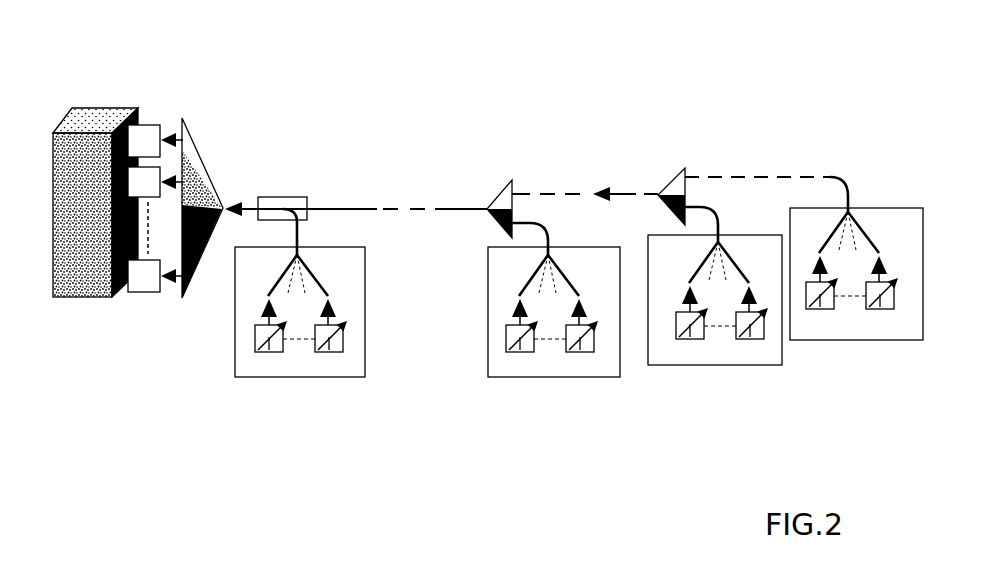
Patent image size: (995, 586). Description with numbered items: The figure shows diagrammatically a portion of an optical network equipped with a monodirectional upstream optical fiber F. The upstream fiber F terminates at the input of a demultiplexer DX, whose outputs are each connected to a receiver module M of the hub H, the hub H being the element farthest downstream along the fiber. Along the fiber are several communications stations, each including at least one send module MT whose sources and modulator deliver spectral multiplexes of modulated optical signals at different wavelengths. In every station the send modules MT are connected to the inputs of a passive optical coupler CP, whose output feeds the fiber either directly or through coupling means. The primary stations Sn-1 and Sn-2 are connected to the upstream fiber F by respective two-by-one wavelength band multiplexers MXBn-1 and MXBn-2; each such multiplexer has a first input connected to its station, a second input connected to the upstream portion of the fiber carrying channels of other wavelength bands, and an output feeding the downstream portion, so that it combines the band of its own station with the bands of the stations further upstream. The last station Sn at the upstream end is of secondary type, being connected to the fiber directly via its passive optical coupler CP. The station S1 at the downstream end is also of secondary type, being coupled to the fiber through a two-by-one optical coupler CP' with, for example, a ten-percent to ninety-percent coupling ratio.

The hub H is at (115, 108).
The receiver module M is at (140, 293).
The demultiplexer DX is at (197, 148).
The 2×1 optical coupler CP' is at (301, 179).
The upstream optical fiber F is at (425, 207).
The band multiplexer MXBn-2 is at (512, 178).
The band multiplexer MXBn-1 is at (680, 165).
The passive optical coupler CP is at (543, 241).
The send module MT is at (260, 352).
The communications station S1 is at (345, 378).
The primary station Sn-2 is at (587, 378).
The primary station Sn-1 is at (758, 367).
The last station Sn is at (885, 342).